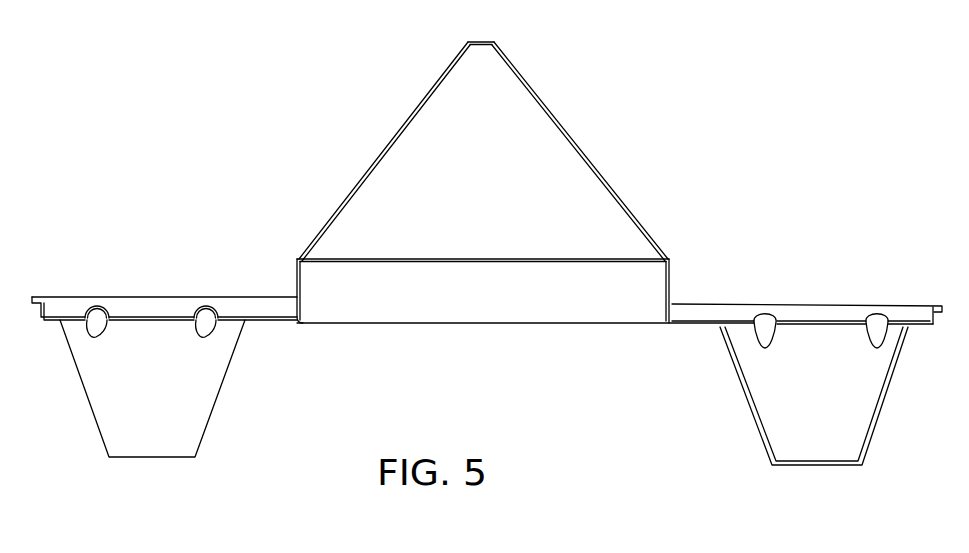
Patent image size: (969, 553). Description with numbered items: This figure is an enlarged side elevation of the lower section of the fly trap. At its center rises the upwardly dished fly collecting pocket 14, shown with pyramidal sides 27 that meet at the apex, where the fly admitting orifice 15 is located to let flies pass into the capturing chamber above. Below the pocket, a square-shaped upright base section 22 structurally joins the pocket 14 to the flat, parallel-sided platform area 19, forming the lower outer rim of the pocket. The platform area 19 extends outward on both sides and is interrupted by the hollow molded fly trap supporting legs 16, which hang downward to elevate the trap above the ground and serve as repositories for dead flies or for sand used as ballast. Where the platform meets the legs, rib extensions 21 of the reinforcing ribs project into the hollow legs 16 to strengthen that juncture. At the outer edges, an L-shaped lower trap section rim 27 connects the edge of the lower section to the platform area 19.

The fly collecting pocket 14 is at (356, 201).
The fly admitting orifice 15 is at (483, 45).
The fly trap supporting legs 16 is at (203, 409).
The platform area 19 is at (275, 323).
The rib extensions 21 is at (96, 329).
The upright base section 22 is at (672, 260).
The L-shaped lower trap section rim 27 is at (570, 133).